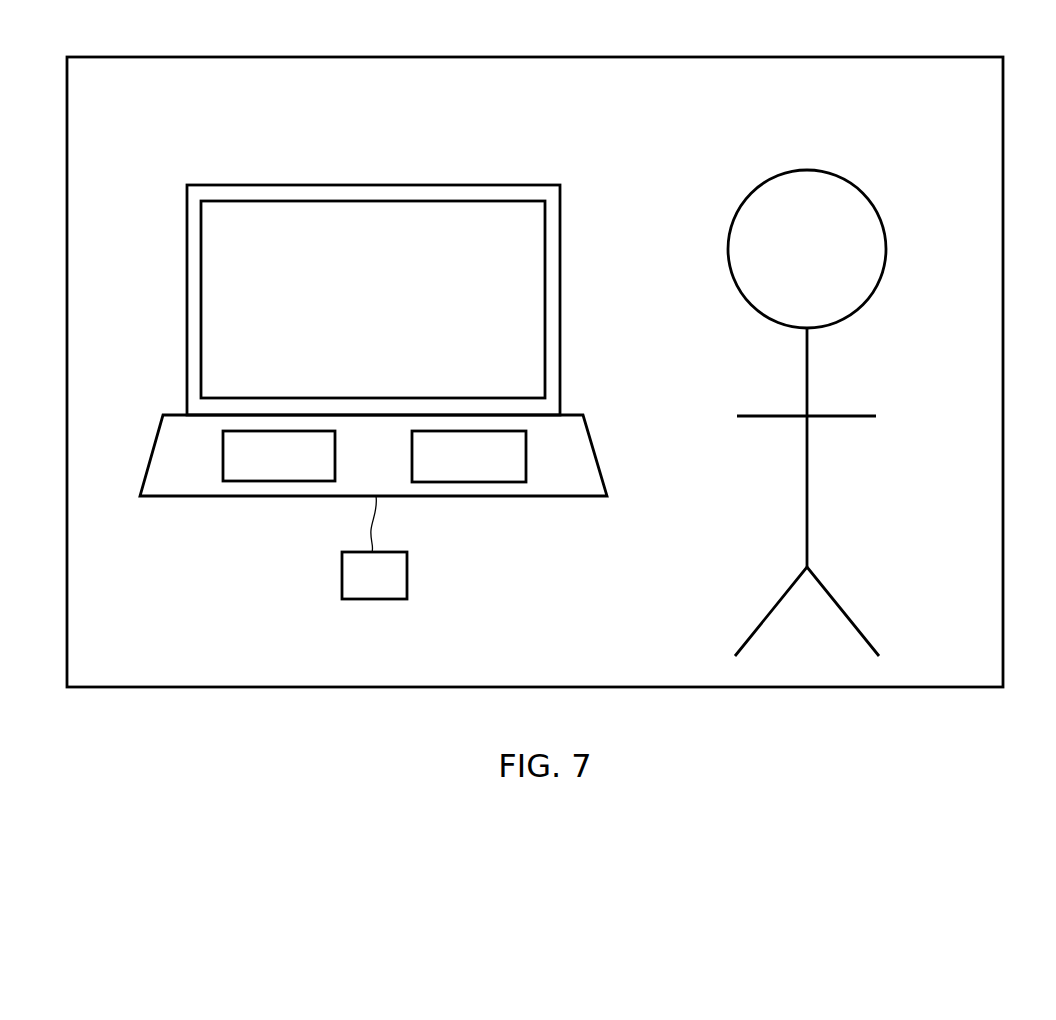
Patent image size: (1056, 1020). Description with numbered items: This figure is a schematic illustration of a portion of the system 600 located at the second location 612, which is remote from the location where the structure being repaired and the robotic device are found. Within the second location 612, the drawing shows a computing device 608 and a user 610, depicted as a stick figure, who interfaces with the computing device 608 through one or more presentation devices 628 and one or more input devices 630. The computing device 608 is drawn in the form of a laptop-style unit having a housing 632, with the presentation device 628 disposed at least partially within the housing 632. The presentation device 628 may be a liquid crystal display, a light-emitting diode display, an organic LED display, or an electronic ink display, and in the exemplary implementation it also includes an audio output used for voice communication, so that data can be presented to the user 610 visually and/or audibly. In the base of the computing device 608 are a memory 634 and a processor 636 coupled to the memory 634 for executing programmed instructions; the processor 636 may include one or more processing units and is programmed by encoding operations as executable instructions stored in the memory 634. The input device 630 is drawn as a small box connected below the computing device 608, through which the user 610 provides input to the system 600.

The second location 612 is at (573, 57).
The computing device 608 is at (178, 147).
The housing 632 is at (468, 185).
The presentation device 628 is at (523, 201).
The memory 634 is at (248, 481).
The processor 636 is at (496, 482).
The input device 630 is at (407, 573).
The system 600 is at (738, 127).
The user 610 is at (882, 169).